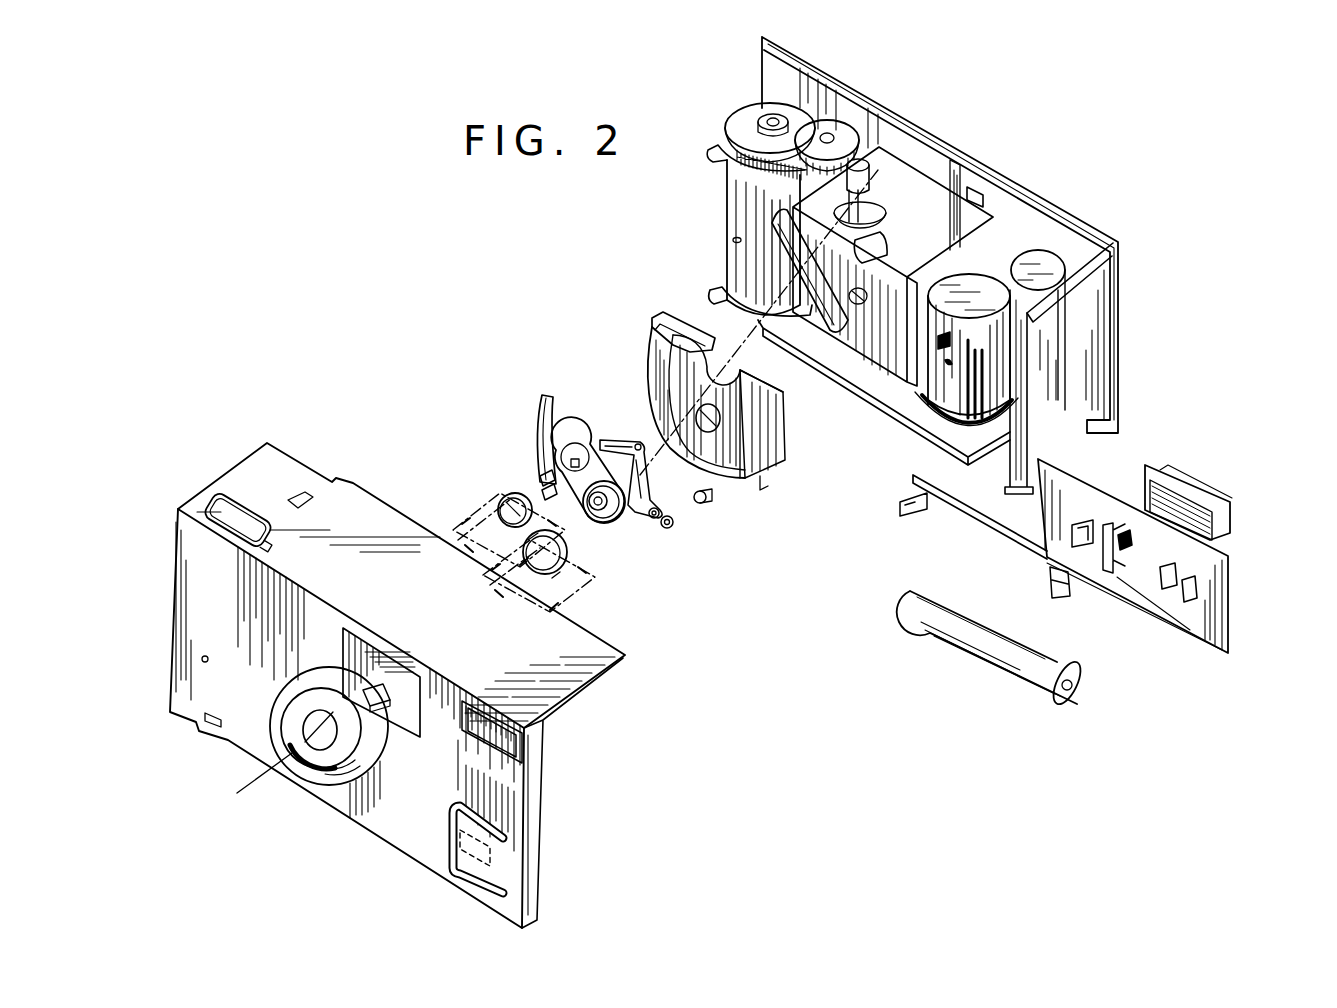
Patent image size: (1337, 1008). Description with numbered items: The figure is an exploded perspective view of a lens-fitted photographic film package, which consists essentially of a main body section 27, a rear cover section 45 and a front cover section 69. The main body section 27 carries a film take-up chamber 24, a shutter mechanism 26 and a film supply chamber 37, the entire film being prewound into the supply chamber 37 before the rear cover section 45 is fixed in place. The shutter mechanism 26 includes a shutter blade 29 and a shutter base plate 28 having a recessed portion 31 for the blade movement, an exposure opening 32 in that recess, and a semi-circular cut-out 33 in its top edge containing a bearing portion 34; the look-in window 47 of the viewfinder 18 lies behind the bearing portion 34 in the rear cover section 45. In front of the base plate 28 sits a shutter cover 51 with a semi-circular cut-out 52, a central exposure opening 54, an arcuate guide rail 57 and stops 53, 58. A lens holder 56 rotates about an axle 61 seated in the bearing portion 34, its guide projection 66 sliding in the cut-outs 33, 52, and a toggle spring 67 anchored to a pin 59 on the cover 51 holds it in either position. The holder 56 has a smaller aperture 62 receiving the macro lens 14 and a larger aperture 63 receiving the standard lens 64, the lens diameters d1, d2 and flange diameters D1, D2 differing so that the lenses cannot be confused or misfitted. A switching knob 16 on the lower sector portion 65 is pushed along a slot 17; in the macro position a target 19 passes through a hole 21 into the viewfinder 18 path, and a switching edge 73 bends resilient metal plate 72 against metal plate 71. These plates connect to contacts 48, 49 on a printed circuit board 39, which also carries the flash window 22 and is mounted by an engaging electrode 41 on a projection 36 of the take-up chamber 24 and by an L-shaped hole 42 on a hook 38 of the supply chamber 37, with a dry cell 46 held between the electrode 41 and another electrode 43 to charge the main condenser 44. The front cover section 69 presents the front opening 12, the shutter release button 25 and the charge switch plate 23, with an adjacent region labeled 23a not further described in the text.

The front opening 12 is at (316, 728).
The macro lens 14 is at (497, 504).
The switching knob 16 is at (563, 555).
The slot 17 is at (340, 775).
The viewfinder 18 is at (352, 627).
The target 19 is at (672, 528).
The hole 21 is at (385, 688).
The flash window 22 is at (1174, 478).
The charge switch plate 23 is at (475, 840).
The switch opening 23a is at (450, 875).
The film take-up chamber 24 is at (727, 222).
The shutter release button 25 is at (222, 505).
The shutter mechanism 26 is at (878, 138).
The main body section 27 is at (980, 137).
The shutter base plate 28 is at (896, 360).
The shutter blade 29 is at (770, 265).
The recessed portion 31 is at (790, 370).
The exposure opening 32 is at (902, 300).
The semi-circular cut-out 33 is at (872, 216).
The bearing portion 34 is at (890, 258).
The projection 36 is at (726, 300).
The film supply chamber 37 is at (993, 372).
The hook 38 is at (952, 343).
The printed circuit board 39 is at (1240, 595).
The engaging electrode 41 is at (922, 512).
The L-shaped hole 42 is at (1084, 520).
The electrode 43 is at (1066, 598).
The main condenser 44 is at (1052, 262).
The rear cover section 45 is at (842, 118).
The dry cell 46 is at (966, 660).
The look-in window 47 is at (984, 190).
The contact 48 is at (1178, 570).
The contact 49 is at (1190, 602).
The shutter cover 51 is at (806, 446).
The semi-circular cut-out 52 is at (700, 344).
The stop 53 is at (654, 336).
The exposure opening 54 is at (722, 425).
The lens holder 56 is at (561, 392).
The arcuate guide rail 57 is at (738, 495).
The stop 58 is at (782, 470).
The pin 59 is at (728, 515).
The axle 61 is at (622, 442).
The smaller aperture 62 is at (560, 450).
The larger aperture 63 is at (622, 520).
The standard lens 64 is at (566, 567).
The lower sector portion 65 is at (540, 480).
The guide projection 66 is at (602, 440).
The toggle spring 67 is at (660, 515).
The front cover section 69 is at (165, 556).
The resilient metal plate 71 is at (1125, 533).
The resilient metal plate 72 is at (1110, 524).
The switching edge 73 is at (604, 522).
The flange diameter of the macro lens D1 is at (478, 548).
The lens diameter of the macro lens d1 is at (470, 522).
The flange diameter of the standard lens D2 is at (512, 595).
The lens diameter of the standard lens d2 is at (520, 605).